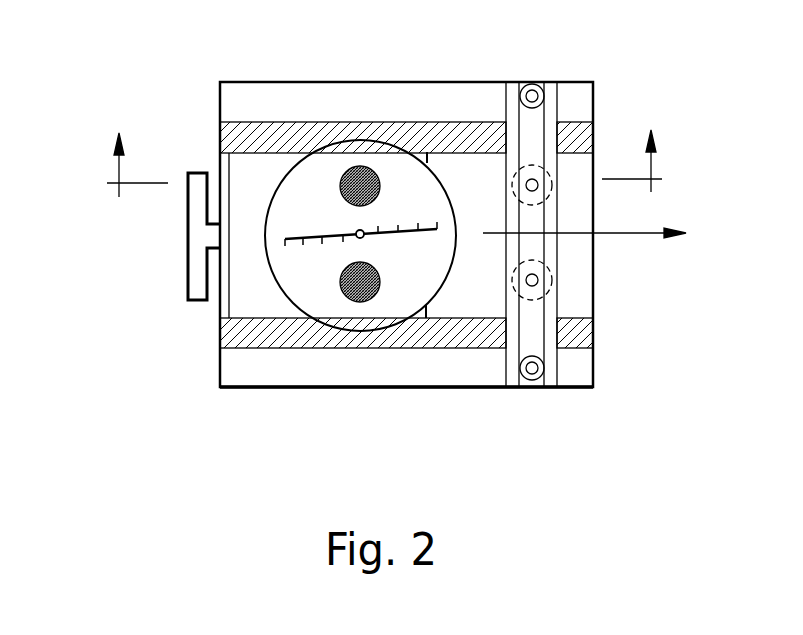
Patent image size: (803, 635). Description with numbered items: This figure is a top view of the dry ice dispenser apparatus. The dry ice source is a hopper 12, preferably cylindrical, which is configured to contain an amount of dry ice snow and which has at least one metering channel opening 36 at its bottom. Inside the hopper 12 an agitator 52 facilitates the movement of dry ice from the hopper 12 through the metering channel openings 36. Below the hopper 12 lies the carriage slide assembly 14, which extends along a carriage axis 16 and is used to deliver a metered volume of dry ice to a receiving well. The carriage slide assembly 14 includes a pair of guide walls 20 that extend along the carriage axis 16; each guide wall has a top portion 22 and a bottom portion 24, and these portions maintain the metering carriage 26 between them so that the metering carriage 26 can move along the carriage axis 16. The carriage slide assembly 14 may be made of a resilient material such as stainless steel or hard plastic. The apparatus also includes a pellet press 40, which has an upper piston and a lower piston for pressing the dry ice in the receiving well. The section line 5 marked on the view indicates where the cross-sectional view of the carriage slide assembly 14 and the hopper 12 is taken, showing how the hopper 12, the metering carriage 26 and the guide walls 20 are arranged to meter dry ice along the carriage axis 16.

The section line 5- 5 is at (384, 177).
The hopper 12 is at (268, 268).
The carriage slide assembly 14 is at (337, 350).
The carriage axis 16 is at (586, 222).
The guide walls 20 is at (580, 138).
The top portion 22 is at (270, 137).
The bottom portion 24 is at (472, 165).
The metering carriage 26 is at (398, 146).
The metering channel opening 36 is at (350, 182).
The pellet press 40 is at (537, 78).
The agitator 52 is at (390, 238).